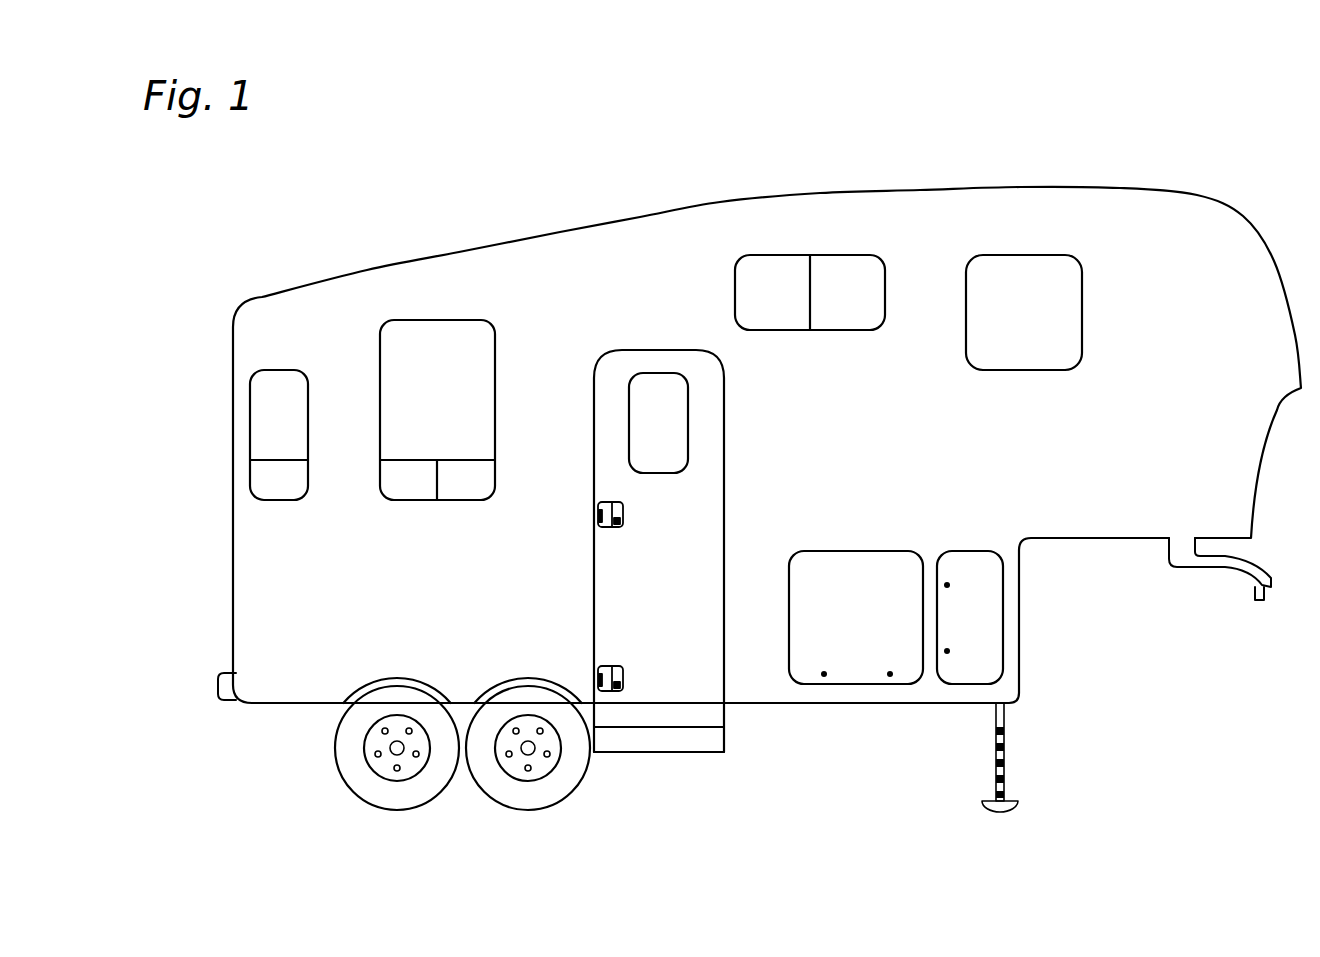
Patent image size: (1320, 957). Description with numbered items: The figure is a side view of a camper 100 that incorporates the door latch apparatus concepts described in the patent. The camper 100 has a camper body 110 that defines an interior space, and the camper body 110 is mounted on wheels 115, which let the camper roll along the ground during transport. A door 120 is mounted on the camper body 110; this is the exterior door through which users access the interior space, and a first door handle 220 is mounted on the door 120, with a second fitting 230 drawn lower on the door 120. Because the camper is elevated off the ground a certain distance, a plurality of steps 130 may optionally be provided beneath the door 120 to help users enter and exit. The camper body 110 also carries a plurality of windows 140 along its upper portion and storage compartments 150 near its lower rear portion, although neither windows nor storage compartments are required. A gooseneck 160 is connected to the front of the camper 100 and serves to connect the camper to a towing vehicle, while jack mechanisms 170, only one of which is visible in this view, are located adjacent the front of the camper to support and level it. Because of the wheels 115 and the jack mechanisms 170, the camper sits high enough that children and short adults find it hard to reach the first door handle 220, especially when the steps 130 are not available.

The camper 100 is at (446, 190).
The camper body 110 is at (684, 205).
The wheels 115 is at (497, 807).
The door 120 is at (654, 350).
The steps 130 is at (697, 753).
The windows 140 is at (411, 320).
The storage compartments 150 is at (962, 684).
The gooseneck 160 is at (1232, 574).
The jack mechanisms 170 is at (1003, 752).
The first door handle 220 is at (597, 508).
The lower door hinge 230 is at (597, 678).